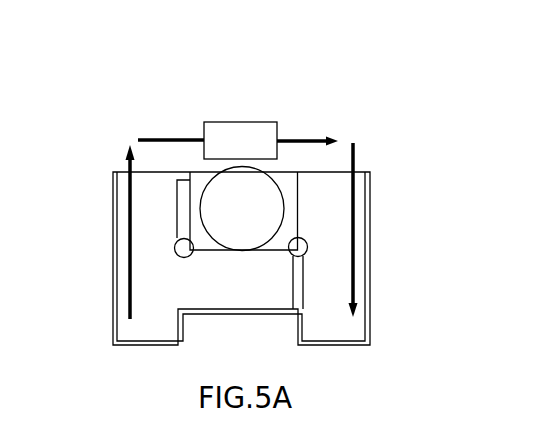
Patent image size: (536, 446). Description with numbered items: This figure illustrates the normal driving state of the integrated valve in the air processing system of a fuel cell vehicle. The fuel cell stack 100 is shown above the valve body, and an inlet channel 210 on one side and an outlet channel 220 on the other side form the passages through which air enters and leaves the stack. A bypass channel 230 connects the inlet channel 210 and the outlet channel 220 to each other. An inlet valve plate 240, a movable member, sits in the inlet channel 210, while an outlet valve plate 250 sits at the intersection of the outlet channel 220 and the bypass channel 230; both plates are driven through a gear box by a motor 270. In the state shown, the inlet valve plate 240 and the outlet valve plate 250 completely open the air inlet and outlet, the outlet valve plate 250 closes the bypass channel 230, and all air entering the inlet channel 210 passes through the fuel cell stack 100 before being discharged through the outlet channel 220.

The fuel cell stack 100 is at (238, 121).
The inlet channel 210 is at (113, 172).
The outlet channel 220 is at (371, 178).
The bypass channel 230 is at (242, 262).
The inlet valve plate 240 is at (183, 207).
The outlet valve plate 250 is at (301, 293).
The motor 270 is at (253, 182).